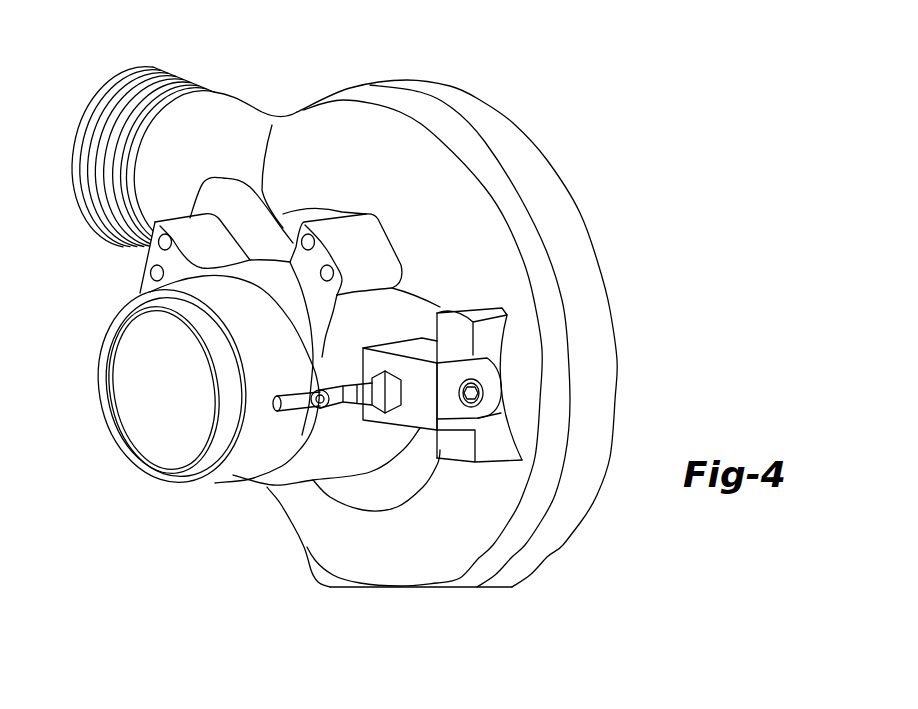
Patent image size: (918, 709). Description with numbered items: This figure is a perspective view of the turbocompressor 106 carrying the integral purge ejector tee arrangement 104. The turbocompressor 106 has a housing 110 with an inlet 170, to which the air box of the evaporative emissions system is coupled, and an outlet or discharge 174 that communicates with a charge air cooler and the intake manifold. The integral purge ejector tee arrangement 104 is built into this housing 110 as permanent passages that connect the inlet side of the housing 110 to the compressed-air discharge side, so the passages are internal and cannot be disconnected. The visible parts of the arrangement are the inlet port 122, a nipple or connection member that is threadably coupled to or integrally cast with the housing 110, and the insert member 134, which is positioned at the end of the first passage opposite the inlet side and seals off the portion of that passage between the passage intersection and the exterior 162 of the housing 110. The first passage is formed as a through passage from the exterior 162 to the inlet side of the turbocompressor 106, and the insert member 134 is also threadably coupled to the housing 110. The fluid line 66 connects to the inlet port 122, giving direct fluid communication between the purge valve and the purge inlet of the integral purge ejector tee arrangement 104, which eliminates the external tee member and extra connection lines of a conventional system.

The fluid line 66 is at (291, 394).
The integral purge ejector tee arrangement 104 is at (453, 462).
The turbocompressor 106 is at (545, 68).
The housing 110 is at (297, 501).
The inlet port 122 is at (344, 374).
The insert member 134 is at (493, 371).
The exterior 162 is at (503, 413).
The inlet 170 is at (124, 449).
The outlet or discharge 174 is at (108, 88).